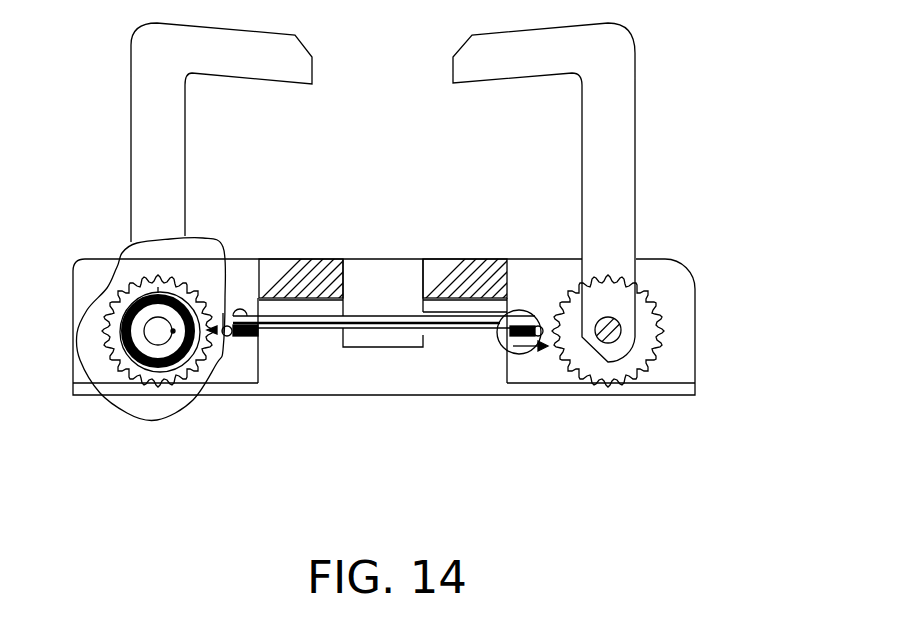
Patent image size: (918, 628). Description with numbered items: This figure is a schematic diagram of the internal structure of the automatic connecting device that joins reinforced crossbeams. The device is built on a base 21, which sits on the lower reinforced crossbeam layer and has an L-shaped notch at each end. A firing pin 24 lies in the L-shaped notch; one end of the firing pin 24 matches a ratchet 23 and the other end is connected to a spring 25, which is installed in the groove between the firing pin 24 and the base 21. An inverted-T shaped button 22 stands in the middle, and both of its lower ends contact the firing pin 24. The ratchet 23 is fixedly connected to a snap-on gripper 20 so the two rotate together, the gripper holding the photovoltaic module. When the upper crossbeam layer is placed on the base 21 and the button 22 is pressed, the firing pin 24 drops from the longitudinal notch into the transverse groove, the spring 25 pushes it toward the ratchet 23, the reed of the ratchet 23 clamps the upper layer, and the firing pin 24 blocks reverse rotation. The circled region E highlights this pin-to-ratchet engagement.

The snap-on gripper 20 is at (608, 155).
The base 21 is at (673, 288).
The button 22 is at (383, 270).
The ratchet 23 is at (639, 358).
The firing pin 24 is at (228, 334).
The spring 25 is at (254, 335).
The detail region E is at (512, 352).